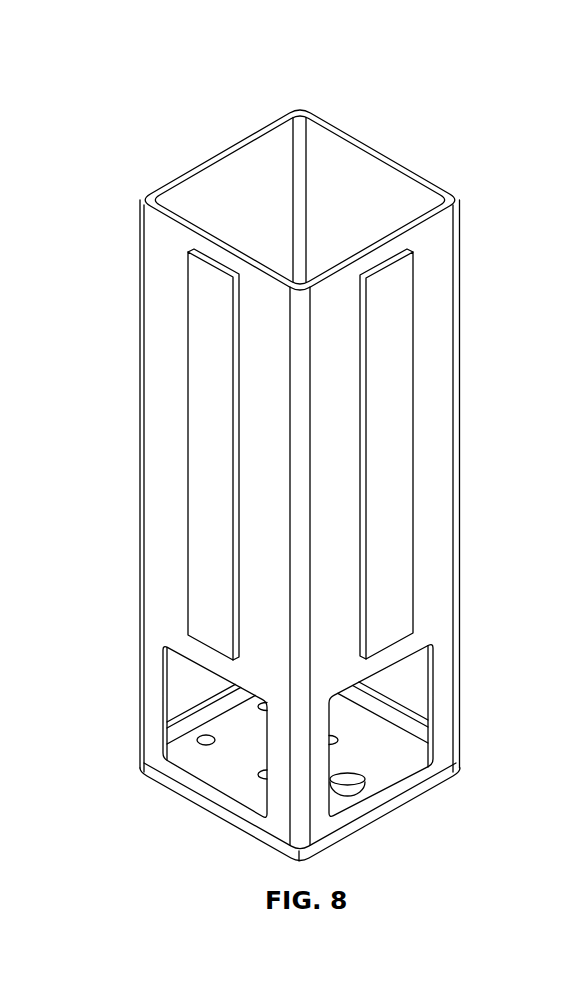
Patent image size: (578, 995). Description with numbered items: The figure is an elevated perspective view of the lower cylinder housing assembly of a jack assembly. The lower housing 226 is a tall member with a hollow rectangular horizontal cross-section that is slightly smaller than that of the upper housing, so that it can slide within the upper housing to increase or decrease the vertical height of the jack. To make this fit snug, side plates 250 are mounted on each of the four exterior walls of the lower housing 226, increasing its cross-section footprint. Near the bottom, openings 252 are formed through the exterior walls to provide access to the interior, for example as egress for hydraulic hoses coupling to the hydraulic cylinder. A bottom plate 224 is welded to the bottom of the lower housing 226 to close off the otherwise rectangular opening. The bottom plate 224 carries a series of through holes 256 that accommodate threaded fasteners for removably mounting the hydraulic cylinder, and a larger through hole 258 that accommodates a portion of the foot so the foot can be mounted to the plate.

The bottom plate 224 is at (410, 763).
The lower housing 226 is at (431, 493).
The side plates 250 is at (200, 381).
The openings 252 is at (425, 691).
The through holes 256 is at (263, 776).
The through hole 258 is at (340, 797).